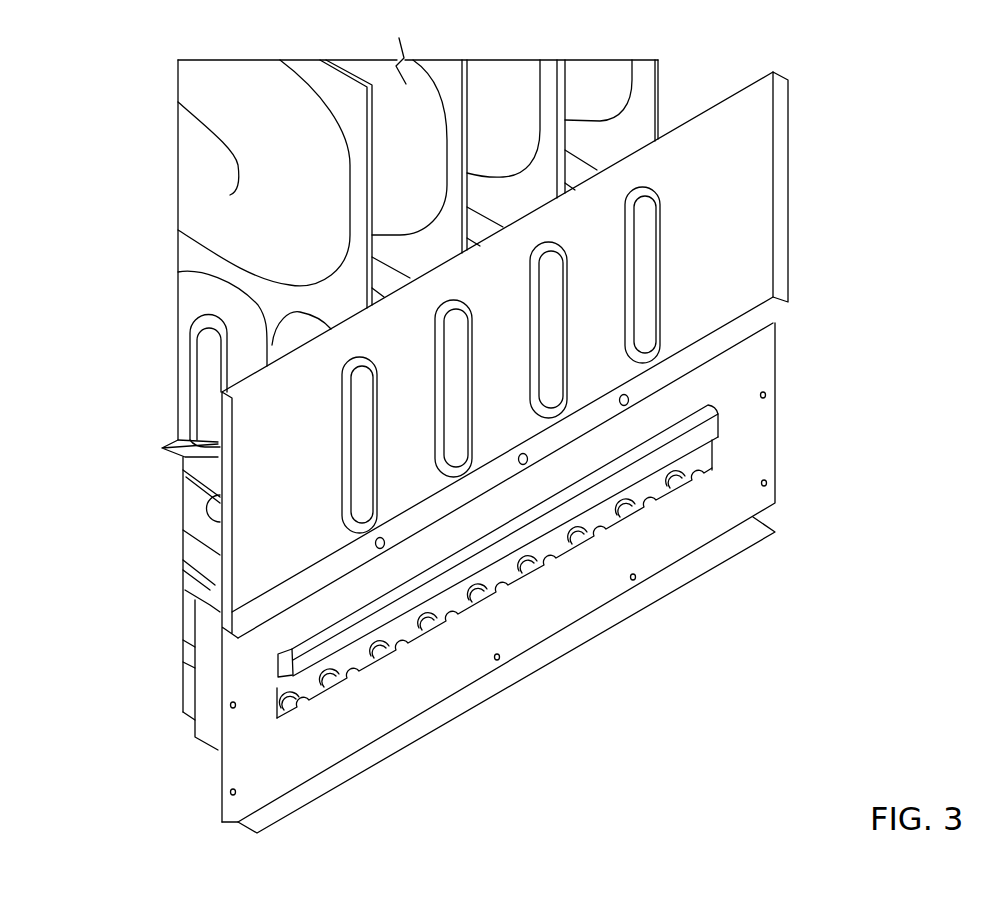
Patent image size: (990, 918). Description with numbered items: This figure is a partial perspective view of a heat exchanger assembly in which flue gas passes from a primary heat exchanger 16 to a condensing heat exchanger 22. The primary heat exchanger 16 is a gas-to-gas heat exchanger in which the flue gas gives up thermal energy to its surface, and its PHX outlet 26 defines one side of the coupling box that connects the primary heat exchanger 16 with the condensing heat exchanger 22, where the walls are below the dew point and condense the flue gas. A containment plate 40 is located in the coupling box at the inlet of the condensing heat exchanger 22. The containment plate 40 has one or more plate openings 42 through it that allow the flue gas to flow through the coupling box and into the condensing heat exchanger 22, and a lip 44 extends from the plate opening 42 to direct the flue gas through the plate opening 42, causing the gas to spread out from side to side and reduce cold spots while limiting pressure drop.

The primary heat exchanger 16 is at (222, 210).
The condensing heat exchanger 22 is at (197, 578).
The PHX outlet 26 is at (363, 372).
The containment plate 40 is at (258, 765).
The plate opening 42 is at (380, 658).
The lip 44 is at (347, 612).